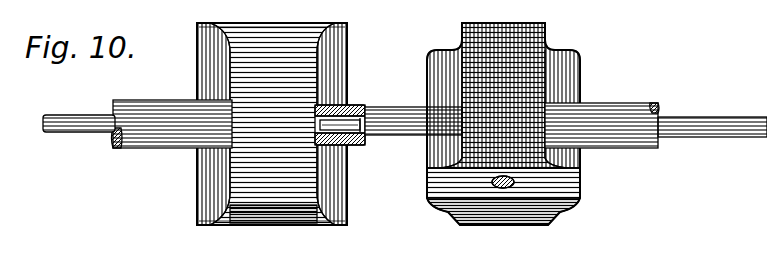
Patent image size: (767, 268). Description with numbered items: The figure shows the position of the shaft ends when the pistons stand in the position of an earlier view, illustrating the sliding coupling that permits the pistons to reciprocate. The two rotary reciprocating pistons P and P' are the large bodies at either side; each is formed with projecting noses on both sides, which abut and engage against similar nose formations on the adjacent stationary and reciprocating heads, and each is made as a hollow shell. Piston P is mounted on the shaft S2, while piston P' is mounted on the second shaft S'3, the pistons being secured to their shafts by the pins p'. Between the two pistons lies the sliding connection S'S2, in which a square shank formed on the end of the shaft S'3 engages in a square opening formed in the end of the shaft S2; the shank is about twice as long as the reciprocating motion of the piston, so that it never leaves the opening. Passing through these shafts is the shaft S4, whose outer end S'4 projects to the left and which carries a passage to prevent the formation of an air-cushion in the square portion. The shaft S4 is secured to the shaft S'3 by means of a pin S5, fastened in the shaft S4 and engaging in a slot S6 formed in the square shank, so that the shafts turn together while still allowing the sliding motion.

The rotary reciprocating piston P is at (272, 124).
The rotary reciprocating piston P' is at (503, 124).
The pin p' is at (535, 203).
The shaft S2 is at (160, 107).
The shaft end S'4 is at (79, 143).
The sleeve coupling S'S2 is at (357, 104).
The shaft section S'3 is at (413, 105).
The pin S5 is at (362, 129).
The slot S6 is at (346, 127).
The shaft S4 is at (702, 117).